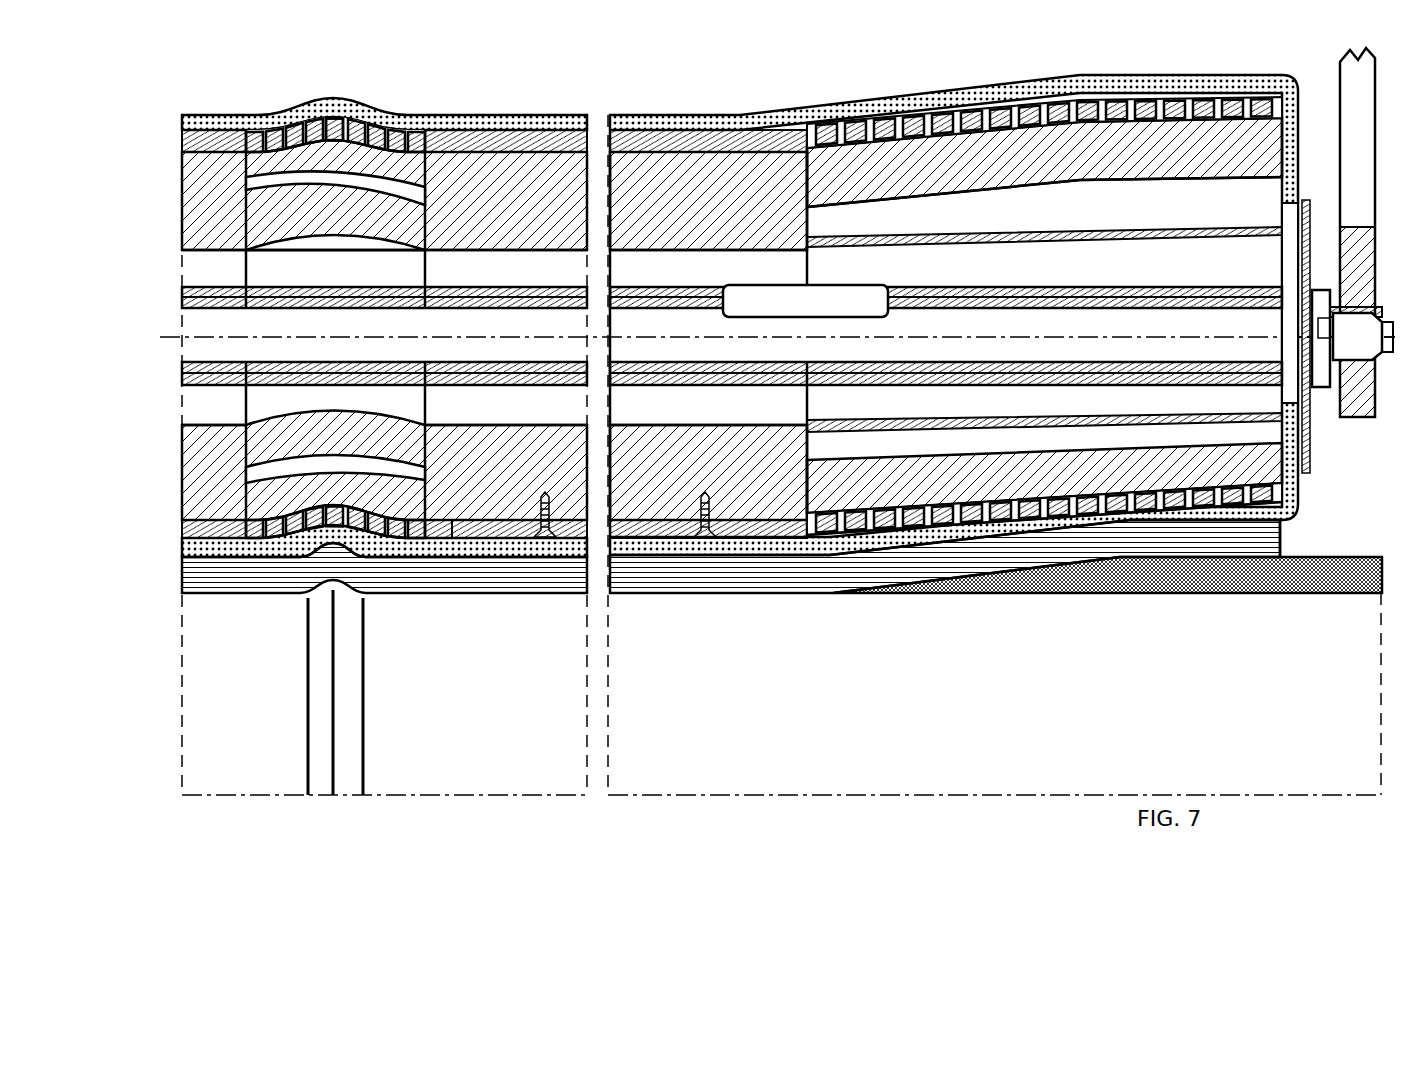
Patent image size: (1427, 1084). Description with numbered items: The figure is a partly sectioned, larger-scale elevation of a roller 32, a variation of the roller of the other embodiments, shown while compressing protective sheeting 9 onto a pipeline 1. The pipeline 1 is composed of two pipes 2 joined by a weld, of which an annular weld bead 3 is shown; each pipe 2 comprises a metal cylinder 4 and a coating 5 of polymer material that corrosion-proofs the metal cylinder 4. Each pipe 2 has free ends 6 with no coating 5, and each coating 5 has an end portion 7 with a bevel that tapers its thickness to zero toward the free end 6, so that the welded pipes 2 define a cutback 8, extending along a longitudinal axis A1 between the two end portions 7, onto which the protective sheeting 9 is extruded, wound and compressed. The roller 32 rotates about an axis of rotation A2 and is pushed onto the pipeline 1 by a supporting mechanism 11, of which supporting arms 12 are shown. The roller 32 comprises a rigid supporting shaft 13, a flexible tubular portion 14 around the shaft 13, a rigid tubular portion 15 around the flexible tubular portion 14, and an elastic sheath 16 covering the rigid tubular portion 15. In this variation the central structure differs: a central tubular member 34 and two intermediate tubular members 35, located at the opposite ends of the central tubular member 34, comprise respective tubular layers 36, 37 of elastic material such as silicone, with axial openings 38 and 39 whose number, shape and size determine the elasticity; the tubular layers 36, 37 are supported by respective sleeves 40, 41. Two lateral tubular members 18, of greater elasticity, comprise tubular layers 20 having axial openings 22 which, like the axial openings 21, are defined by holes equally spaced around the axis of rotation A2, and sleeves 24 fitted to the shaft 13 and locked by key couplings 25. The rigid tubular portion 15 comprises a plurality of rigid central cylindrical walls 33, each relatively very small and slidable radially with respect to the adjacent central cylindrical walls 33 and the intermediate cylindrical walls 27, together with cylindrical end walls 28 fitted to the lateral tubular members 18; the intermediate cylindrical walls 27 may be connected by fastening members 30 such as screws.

The pipeline 1 is at (915, 808).
The pipe 2 is at (228, 808).
The annular weld bead 3 is at (347, 635).
The metal cylinder 4 is at (1340, 595).
The coating 5 is at (1320, 570).
The free end 6 is at (265, 678).
The end portion 7 is at (1133, 508).
The cutback 8 is at (452, 538).
The protective sheeting 9 is at (1286, 540).
The supporting mechanism 11 is at (1340, 443).
The supporting arm 12 is at (1352, 134).
The rigid supporting shaft 13 is at (1140, 330).
The flexible tubular portion 14 is at (1285, 187).
The rigid tubular portion 15 is at (1296, 98).
The elastic sheath 16 is at (1227, 513).
The lateral tubular member 18 is at (800, 475).
The tubular layer 20 is at (978, 165).
The axial opening 21 is at (1030, 268).
The axial opening 22 is at (800, 205).
The sleeve 24 is at (1085, 298).
The key coupling 25 is at (860, 293).
The intermediate cylindrical wall 27 is at (628, 140).
The cylindrical end wall 28 is at (1256, 185).
The fastening member 30 is at (545, 540).
The roller 32 is at (262, 90).
The central cylindrical wall 33 is at (458, 117).
The central tubular member 34 is at (370, 128).
The intermediate tubular member 35 is at (222, 118).
The tubular layer 36 is at (262, 177).
The tubular layer 37 is at (198, 155).
The axial opening 38 is at (266, 256).
The axial opening 39 is at (262, 193).
The sleeve 40 is at (318, 300).
The sleeve 41 is at (457, 303).
The longitudinal axis A1 is at (1040, 795).
The axis of rotation A2 is at (1242, 337).